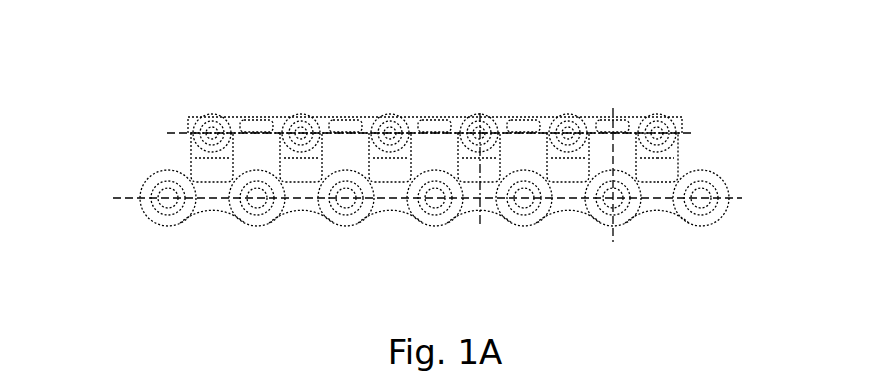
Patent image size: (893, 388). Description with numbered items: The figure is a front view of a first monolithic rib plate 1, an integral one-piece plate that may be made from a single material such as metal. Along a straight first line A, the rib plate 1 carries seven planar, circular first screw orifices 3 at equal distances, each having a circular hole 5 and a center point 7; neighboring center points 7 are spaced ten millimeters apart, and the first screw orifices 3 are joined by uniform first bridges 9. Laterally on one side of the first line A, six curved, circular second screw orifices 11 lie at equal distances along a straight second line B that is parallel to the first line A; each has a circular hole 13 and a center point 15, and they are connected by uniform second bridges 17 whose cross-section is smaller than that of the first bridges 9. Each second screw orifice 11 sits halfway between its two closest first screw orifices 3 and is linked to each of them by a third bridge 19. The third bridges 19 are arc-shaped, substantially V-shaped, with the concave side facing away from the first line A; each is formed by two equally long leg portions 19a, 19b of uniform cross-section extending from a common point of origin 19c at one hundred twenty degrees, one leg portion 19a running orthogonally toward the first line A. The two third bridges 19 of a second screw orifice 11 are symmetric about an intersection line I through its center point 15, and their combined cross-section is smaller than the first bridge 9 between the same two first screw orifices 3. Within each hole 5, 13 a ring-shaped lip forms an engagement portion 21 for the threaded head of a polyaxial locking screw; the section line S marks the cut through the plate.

The first monolithic rib plate 1 is at (136, 58).
The first screw orifices 3 is at (163, 227).
The circular hole 5 is at (172, 205).
The center point 7 is at (258, 202).
The first bridges 9 is at (390, 203).
The second screw orifices 11 is at (196, 126).
The circular hole 13 is at (212, 128).
The center point 15 is at (300, 128).
The second bridges 17 is at (435, 118).
The third bridges 19 is at (468, 171).
The leg portion 19a is at (646, 160).
The leg portion 19b is at (669, 162).
The common point of origin 19c is at (669, 162).
The engagement portion 21 is at (513, 183).
The first line A is at (742, 198).
The second line B is at (690, 132).
The intersection line I is at (480, 113).
The section line S- S is at (602, 242).